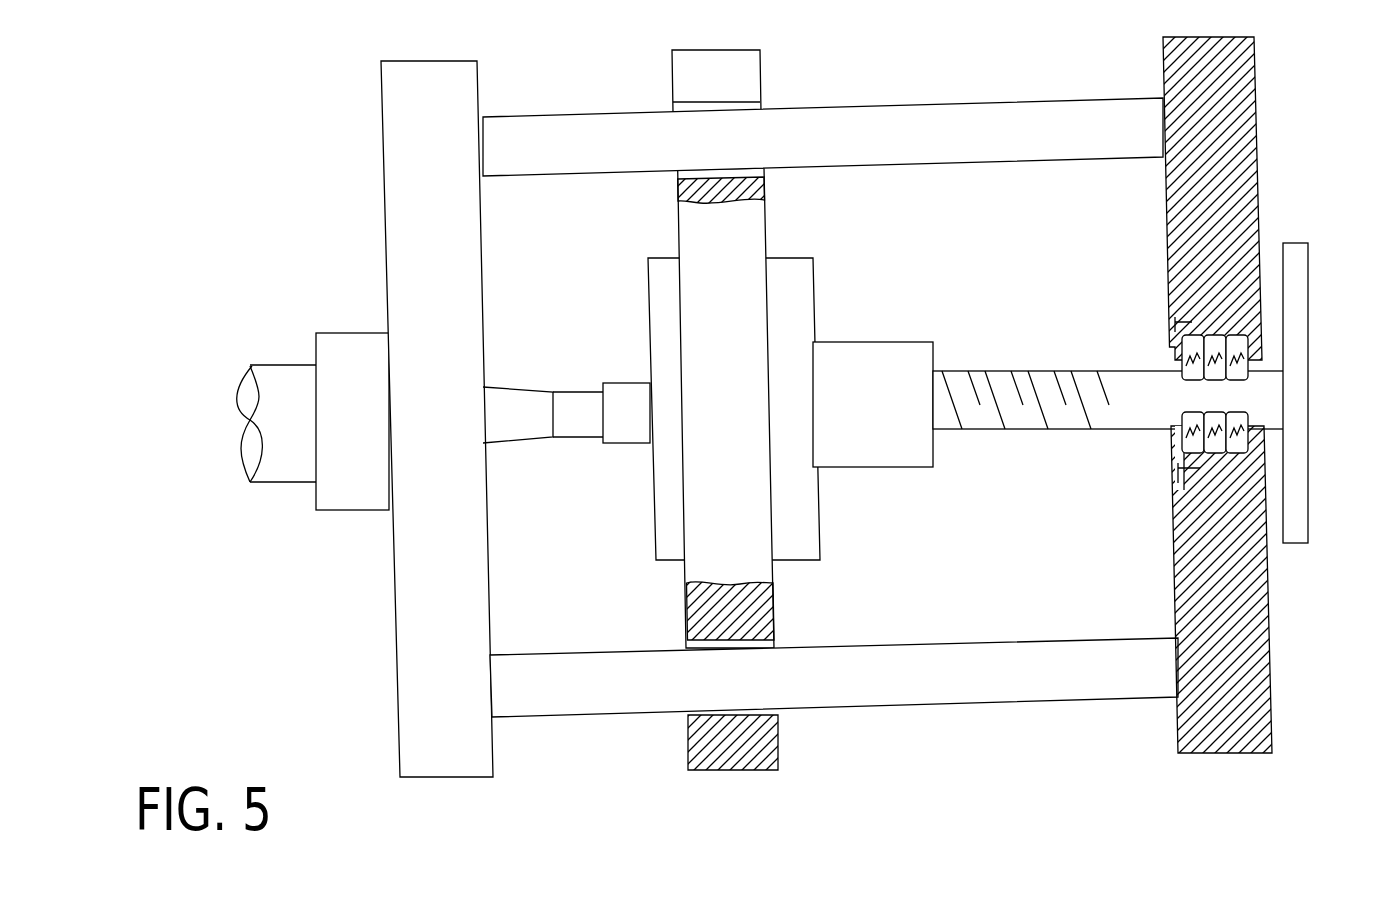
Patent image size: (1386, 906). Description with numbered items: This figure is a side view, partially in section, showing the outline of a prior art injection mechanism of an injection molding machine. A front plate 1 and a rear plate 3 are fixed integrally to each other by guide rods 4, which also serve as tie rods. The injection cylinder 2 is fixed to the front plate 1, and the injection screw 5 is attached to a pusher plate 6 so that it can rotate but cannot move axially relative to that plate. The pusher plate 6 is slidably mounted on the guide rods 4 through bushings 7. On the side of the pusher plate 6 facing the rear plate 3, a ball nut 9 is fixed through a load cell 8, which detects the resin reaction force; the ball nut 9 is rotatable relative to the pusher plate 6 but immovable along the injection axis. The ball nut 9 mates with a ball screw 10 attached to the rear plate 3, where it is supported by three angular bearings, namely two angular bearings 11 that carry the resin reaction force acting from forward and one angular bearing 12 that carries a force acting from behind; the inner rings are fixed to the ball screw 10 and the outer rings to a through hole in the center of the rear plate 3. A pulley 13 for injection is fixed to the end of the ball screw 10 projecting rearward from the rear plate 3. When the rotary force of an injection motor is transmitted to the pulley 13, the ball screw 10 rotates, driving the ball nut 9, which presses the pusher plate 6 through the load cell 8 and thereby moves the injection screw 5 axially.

The front plate 1 is at (410, 659).
The injection cylinder 2 is at (293, 467).
The rear plate 3 is at (1235, 605).
The guide rods 4 is at (971, 120).
The injection screw 5 is at (537, 437).
The pusher plate 6 is at (732, 238).
The bushings 7 is at (733, 98).
The load cell 8 is at (803, 320).
The ball nut 9 is at (858, 440).
The ball screw 10 is at (1053, 413).
The angular bearings 11 is at (1215, 338).
The angular bearing 12 is at (1242, 330).
The pulley for injection 13 is at (1303, 468).